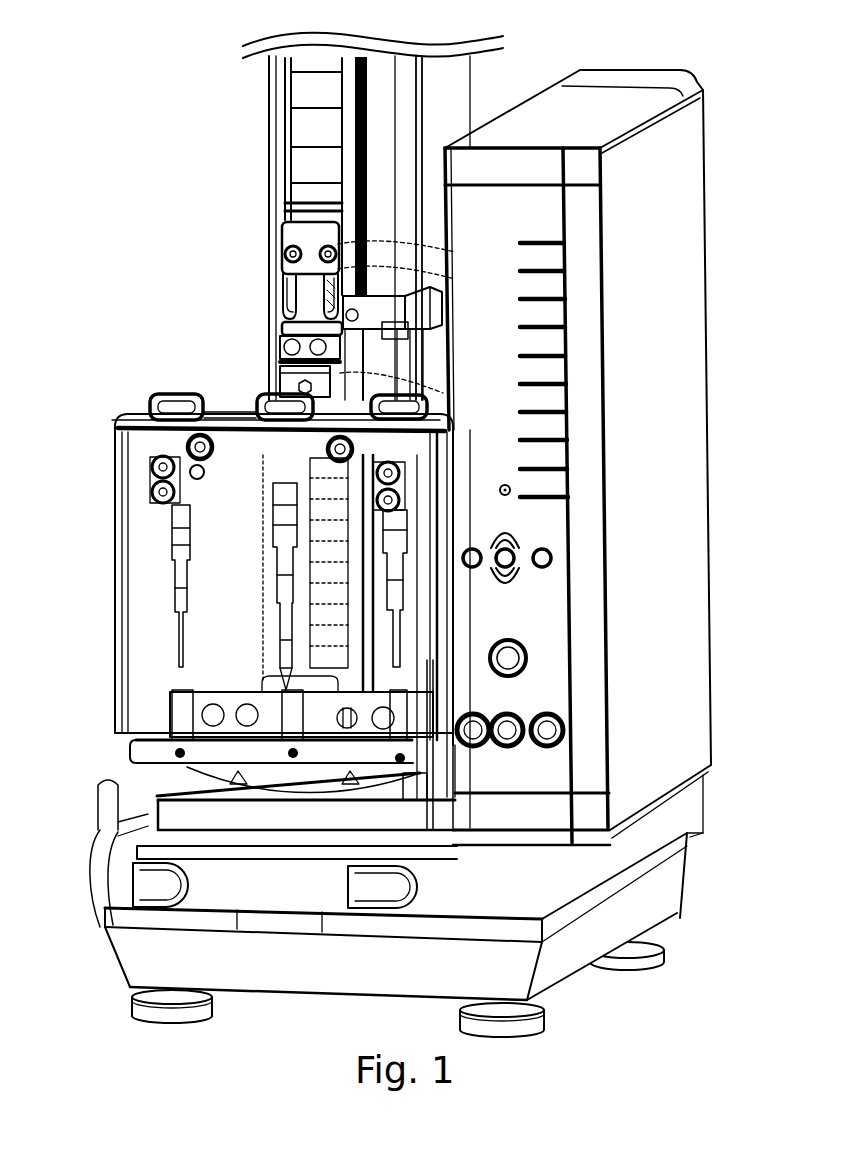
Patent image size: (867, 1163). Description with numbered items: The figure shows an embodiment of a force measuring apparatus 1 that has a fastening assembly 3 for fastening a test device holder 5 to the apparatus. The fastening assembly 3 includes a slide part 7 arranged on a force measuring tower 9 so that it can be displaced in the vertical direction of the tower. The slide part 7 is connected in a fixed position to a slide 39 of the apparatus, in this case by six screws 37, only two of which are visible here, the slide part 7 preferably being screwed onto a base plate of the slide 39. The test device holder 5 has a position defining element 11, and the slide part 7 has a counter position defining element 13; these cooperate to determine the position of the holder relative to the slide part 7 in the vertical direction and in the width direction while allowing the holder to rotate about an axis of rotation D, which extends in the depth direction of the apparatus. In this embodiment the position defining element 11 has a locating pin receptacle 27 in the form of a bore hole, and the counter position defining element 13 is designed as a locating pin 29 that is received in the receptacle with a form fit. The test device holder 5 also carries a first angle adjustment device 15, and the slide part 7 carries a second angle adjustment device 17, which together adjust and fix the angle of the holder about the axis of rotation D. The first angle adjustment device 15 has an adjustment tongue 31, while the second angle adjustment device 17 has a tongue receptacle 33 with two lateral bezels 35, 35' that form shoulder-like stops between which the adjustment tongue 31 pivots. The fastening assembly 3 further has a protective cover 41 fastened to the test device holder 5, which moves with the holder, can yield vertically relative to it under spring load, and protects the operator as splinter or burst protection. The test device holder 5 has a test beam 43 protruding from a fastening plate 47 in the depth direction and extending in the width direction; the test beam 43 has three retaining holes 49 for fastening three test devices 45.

The force measuring apparatus 1 is at (180, 110).
The fastening assembly 3 is at (212, 293).
The test device holder 5 is at (218, 373).
The slide part 7 is at (278, 228).
The force measuring tower 9 is at (486, 75).
The position defining element 11 is at (305, 378).
The counter position defining element 13 is at (274, 380).
The first angle adjustment device 15 is at (283, 293).
The second angle adjustment device 17 is at (276, 262).
The locating pin receptacle 27 is at (292, 341).
The locating pin 29 is at (270, 369).
The adjustment tongue 31 is at (260, 292).
The tongue receptacle 33 is at (248, 279).
The lateral bezel 35 is at (234, 303).
The lateral bezel 35' is at (421, 280).
The screw 37 is at (282, 252).
The slide 39 is at (283, 222).
The protective cover 41 is at (117, 607).
The test beam 43 is at (245, 392).
The test device 45 is at (172, 543).
The fastening plate 47 is at (435, 400).
The retaining hole 49 is at (150, 410).
The axis of rotation D is at (136, 480).